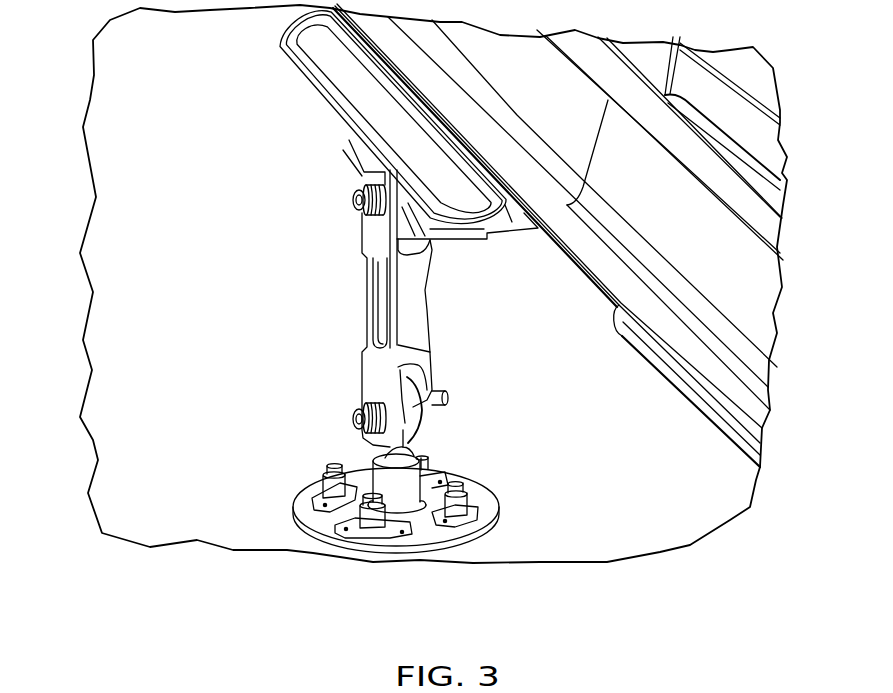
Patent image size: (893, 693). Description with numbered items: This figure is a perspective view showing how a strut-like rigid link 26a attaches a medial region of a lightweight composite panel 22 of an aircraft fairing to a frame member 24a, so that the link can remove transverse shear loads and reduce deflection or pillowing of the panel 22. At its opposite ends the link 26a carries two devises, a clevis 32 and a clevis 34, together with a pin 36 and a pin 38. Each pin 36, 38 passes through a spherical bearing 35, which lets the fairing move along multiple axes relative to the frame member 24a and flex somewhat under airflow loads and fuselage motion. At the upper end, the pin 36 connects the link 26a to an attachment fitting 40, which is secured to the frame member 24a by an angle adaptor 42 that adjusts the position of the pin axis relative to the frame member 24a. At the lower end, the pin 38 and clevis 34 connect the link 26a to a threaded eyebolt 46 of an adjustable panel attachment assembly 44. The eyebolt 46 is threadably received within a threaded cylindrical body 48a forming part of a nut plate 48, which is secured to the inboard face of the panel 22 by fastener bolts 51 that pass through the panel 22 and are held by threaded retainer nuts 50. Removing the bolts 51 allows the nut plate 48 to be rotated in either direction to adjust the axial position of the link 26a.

The composite panel 22 is at (140, 286).
The frame member 24a is at (677, 183).
The rigid link 26a is at (377, 305).
The clevis 32 is at (353, 196).
The clevis 34 is at (440, 374).
The spherical bearing 35 is at (404, 214).
The pin 36 is at (362, 212).
The pin 38 is at (355, 415).
The attachment fitting 40 is at (344, 119).
The angle adaptor 42 is at (285, 45).
The panel attachment assembly 44 is at (495, 531).
The threaded eyebolt 46 is at (400, 449).
The nut plate 48 is at (300, 510).
The threaded cylindrical body 48a is at (395, 478).
The threaded retainer nut 50 is at (395, 536).
The fastener bolt 51 is at (323, 470).